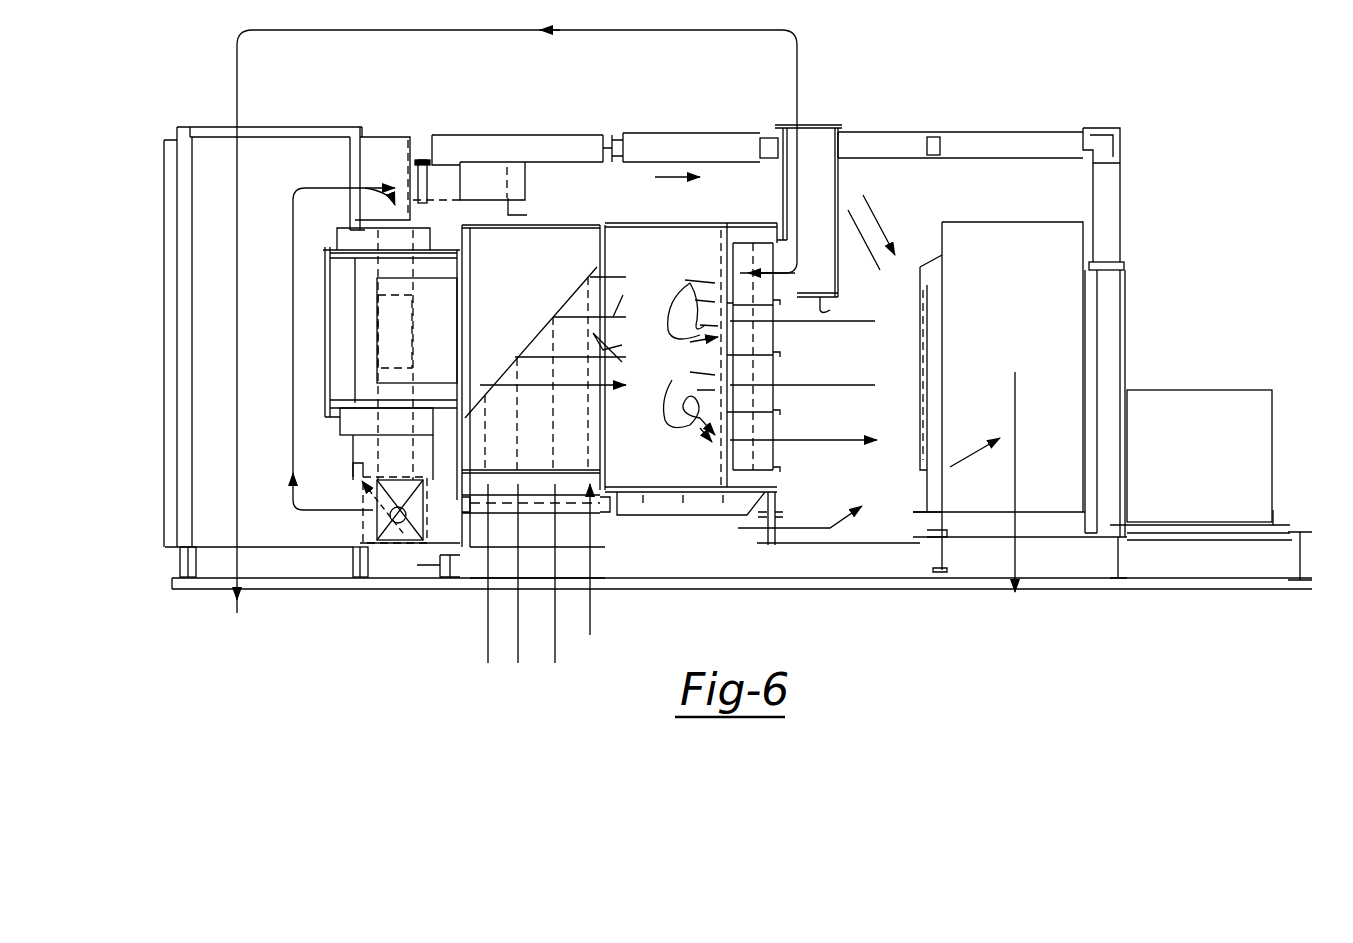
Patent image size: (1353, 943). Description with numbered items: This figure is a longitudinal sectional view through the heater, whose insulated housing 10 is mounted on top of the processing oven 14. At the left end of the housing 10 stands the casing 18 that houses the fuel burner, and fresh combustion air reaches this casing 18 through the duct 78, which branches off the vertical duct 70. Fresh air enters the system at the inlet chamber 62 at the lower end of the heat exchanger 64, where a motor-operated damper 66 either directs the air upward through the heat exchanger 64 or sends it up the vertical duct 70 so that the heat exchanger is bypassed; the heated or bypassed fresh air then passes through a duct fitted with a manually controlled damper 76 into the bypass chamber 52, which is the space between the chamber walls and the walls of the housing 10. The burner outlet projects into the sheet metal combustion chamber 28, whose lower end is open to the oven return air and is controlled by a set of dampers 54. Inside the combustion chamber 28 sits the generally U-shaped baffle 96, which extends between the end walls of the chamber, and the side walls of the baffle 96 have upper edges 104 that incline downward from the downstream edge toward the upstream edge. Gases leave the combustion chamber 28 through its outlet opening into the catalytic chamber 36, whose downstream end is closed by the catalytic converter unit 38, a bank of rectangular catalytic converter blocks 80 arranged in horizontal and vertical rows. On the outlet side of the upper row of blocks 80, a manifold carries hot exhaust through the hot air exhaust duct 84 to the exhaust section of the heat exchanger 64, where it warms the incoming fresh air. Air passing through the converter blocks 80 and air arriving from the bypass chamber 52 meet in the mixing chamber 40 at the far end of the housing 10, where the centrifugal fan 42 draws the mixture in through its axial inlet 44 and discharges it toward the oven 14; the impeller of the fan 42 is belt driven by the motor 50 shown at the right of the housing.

The housing 10 is at (1065, 122).
The processing oven 14 is at (497, 143).
The casing 18 is at (328, 320).
The combustion chamber 28 is at (558, 245).
The catalytic chamber 36 is at (695, 232).
The catalytic converter unit 38 is at (792, 368).
The mixing chamber 40 is at (947, 172).
The centrifugal fan 42 is at (1052, 192).
The axial inlet 44 is at (925, 403).
The motor 50 is at (1240, 360).
The bypass chamber 52 is at (648, 165).
The dampers 54 is at (535, 512).
The inlet chamber 62 is at (393, 541).
The heat exchanger 64 is at (205, 426).
The damper 66 is at (363, 517).
The vertical duct 70 is at (402, 457).
The manually controlled damper 76 is at (523, 208).
The duct 78 is at (392, 322).
The catalytic converter blocks 80 is at (828, 310).
The hot air exhaust duct 84 is at (838, 193).
The baffle 96 is at (573, 305).
The upper edges 104 is at (528, 338).